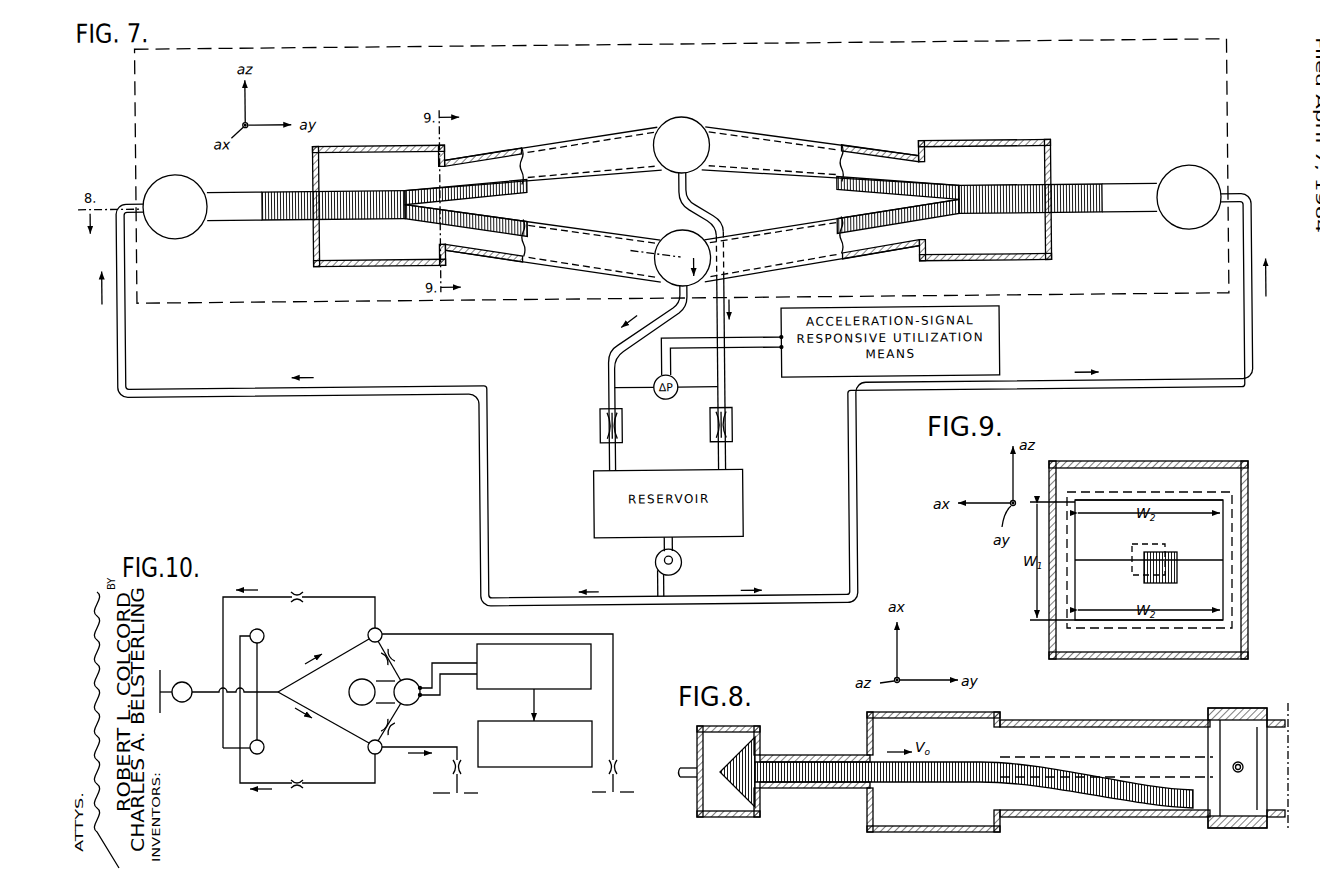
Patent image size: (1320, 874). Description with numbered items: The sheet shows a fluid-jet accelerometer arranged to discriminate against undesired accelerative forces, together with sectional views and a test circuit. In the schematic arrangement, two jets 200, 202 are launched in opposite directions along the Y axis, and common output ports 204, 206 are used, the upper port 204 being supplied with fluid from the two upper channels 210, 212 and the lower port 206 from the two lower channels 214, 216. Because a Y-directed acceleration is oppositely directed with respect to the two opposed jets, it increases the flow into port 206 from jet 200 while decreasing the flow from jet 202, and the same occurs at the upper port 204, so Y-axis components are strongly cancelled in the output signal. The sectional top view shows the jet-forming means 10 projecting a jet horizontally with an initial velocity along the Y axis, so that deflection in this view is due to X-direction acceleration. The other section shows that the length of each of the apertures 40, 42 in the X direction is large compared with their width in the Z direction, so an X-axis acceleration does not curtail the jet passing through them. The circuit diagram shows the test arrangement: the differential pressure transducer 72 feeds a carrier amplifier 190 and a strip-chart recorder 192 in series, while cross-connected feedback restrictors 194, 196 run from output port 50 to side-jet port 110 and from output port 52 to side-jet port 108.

In FIG. 7, the jet-forming means 10 is at (255, 220).
In FIG. 8, the jet-forming means 10 is at (805, 755).
In FIG. 7, the jet 200 is at (353, 199).
In FIG. 9, the jet 200 is at (1174, 551).
In FIG. 8, the jet 200 is at (921, 780).
In FIG. 7, the jet 202 is at (995, 191).
In FIG. 7, the common output port 204 is at (686, 119).
In FIG. 7, the common output port 206 is at (671, 234).
In FIG. 8, the common output port 206 is at (1240, 712).
In FIG. 7, the upper channel 210 is at (582, 140).
In FIG. 9, the upper channel 210 is at (1184, 508).
In FIG. 7, the upper channel 212 is at (775, 139).
In FIG. 7, the lower channel 214 is at (569, 259).
In FIG. 9, the lower channel 214 is at (1103, 613).
In FIG. 8, the lower channel 214 is at (1077, 720).
In FIG. 7, the lower channel 216 is at (777, 259).
In FIG. 9, the aperture 40 is at (1217, 523).
In FIG. 9, the aperture 42 is at (1217, 594).
In FIG. 10, the output port 50 is at (383, 630).
In FIG. 10, the output port 52 is at (380, 752).
In FIG. 10, the differential pressure transducer 72 is at (407, 679).
In FIG. 10, the side-jet port 108 is at (265, 635).
In FIG. 10, the side-jet port 110 is at (265, 747).
In FIG. 10, the carrier amplifier 190 is at (510, 691).
In FIG. 10, the strip-chart recorder 192 is at (527, 763).
In FIG. 10, the feedback restrictor 194 is at (298, 592).
In FIG. 10, the feedback restrictor 196 is at (299, 790).